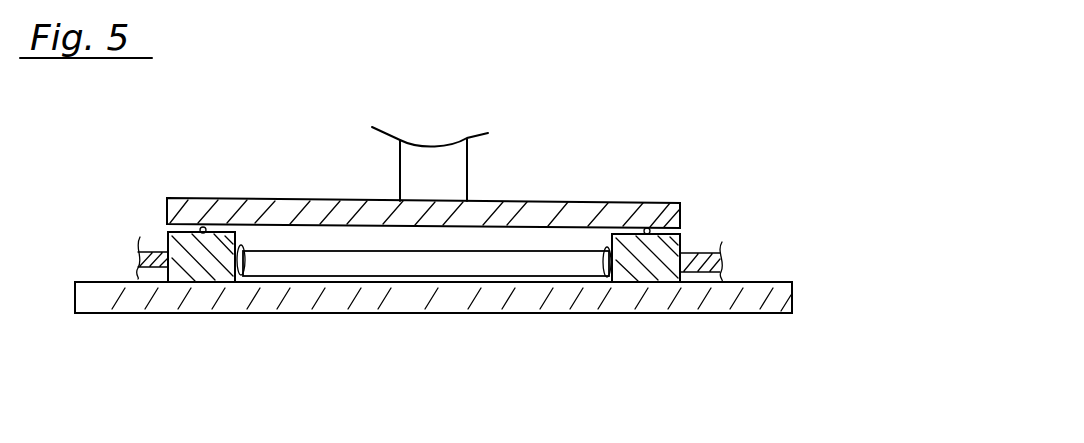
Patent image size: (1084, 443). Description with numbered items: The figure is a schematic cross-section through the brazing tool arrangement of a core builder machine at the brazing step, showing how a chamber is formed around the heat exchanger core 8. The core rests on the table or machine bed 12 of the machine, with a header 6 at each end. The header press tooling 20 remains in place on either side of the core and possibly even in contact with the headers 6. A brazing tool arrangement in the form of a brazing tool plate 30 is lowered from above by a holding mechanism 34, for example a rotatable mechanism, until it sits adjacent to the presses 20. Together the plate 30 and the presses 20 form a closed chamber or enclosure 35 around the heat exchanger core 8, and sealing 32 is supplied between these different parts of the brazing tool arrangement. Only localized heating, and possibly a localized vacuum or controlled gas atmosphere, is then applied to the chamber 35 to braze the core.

The headers 6 is at (242, 283).
The heat exchanger core 8 is at (438, 264).
The table/machine bed 12 is at (713, 305).
The header press tooling 20 is at (648, 282).
The brazing tool plate 30 is at (597, 204).
The sealing 32 is at (204, 227).
The holding mechanism 34 is at (467, 163).
The chamber 35 is at (318, 240).